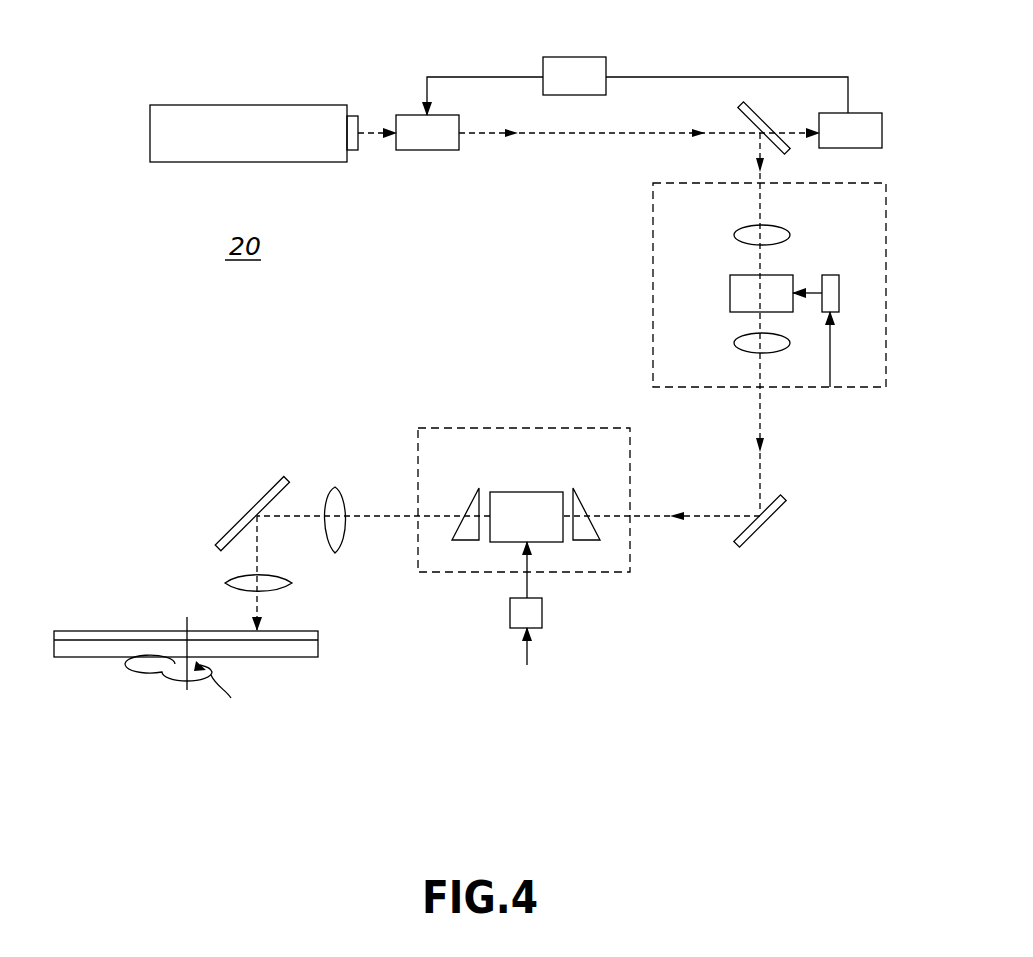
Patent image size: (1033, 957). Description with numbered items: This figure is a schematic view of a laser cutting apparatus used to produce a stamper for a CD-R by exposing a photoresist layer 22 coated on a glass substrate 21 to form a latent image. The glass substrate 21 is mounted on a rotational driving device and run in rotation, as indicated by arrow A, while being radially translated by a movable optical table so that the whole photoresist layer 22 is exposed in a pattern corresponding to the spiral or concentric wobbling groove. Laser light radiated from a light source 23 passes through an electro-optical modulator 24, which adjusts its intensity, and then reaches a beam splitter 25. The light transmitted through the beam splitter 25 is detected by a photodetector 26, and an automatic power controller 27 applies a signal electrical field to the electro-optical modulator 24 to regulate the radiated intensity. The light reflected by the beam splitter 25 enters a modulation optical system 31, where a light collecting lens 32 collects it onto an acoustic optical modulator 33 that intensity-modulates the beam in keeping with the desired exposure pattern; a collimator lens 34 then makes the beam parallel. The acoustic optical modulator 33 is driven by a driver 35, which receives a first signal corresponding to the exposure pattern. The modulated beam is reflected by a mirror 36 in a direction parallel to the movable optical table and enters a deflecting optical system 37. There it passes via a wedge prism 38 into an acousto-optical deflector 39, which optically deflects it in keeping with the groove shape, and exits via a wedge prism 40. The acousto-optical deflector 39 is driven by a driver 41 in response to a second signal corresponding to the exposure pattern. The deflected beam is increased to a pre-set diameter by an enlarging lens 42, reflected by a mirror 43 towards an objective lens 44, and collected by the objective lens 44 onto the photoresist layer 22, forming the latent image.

The glass substrate 21 is at (110, 657).
The photoresist layer 22 is at (115, 631).
The light source 23 is at (272, 105).
The electro-optical modulator 24 is at (408, 115).
The beam splitter 25 is at (741, 108).
The photodetector 26 is at (872, 113).
The automatic power controller 27 is at (584, 57).
The modulation optical system 31 is at (653, 322).
The light collecting lens 32 is at (735, 235).
The acoustic optical modulator 33 is at (730, 292).
The collimator lens 34 is at (735, 343).
The driver 35 is at (830, 275).
The mirror 36 is at (782, 515).
The deflecting optical system 37 is at (520, 428).
The wedge prism 38 is at (587, 503).
The acousto-optical deflector 39 is at (528, 492).
The wedge prism 40 is at (470, 507).
The driver 41 is at (542, 610).
The enlarging lens 42 is at (335, 487).
The mirror 43 is at (265, 498).
The objective lens 44 is at (293, 583).